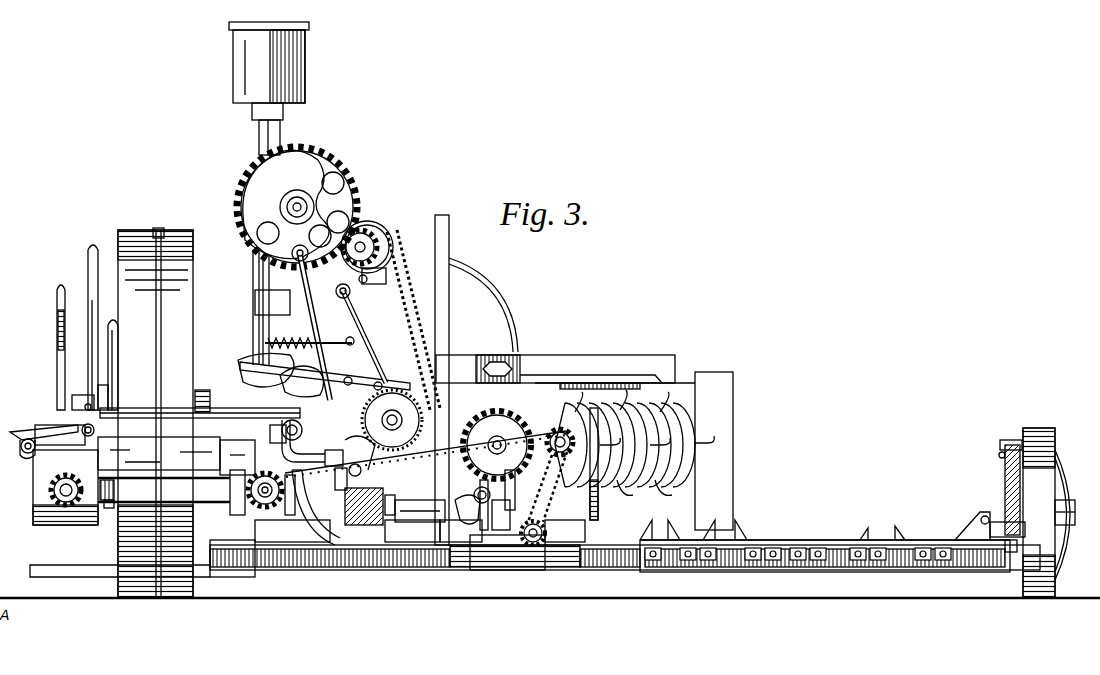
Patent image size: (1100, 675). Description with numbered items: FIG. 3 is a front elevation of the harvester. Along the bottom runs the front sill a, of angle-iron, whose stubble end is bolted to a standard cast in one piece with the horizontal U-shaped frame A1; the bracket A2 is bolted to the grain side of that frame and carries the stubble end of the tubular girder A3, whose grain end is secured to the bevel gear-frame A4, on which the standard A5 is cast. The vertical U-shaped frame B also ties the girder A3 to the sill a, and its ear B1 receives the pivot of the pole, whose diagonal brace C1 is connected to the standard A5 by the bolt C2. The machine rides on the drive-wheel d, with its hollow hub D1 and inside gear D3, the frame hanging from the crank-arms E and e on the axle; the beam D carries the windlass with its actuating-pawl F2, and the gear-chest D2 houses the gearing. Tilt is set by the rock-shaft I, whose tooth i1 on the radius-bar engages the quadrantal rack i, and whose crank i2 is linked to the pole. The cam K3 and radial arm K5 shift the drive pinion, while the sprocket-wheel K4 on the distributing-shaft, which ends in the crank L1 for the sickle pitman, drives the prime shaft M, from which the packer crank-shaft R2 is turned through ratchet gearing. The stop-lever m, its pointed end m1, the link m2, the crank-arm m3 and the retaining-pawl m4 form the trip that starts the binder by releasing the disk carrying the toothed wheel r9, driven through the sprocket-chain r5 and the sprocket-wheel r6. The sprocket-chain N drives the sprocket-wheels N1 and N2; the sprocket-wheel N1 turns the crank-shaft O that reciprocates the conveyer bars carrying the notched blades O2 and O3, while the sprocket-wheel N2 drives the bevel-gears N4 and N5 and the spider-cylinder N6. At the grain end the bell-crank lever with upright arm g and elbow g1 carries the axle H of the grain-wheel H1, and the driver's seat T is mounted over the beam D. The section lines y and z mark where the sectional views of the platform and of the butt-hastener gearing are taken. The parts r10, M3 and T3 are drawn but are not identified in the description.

The main cam gear r10 is at (336, 157).
The toothed wheel r9 is at (372, 222).
The sprocket-wheel r6 is at (393, 230).
The sprocket-chain r5 is at (412, 298).
The stop-lever m is at (325, 322).
The pointed end of stop-lever m1 is at (385, 380).
The link m2 is at (356, 343).
The crank-arm m3 is at (352, 300).
The retaining-pawl m4 is at (335, 272).
The drive-wheel d is at (140, 305).
The actuating-pawl F2 is at (52, 347).
The tooth i1 is at (90, 302).
The quadrantal rack i is at (118, 373).
The crank i2 is at (86, 400).
The sprocket-wheel K4 is at (105, 379).
The radial arm K5 is at (44, 437).
The cam K3 is at (164, 490).
The crank-arm e is at (208, 399).
The rock-shaft I is at (238, 408).
The U-shaped frame A1 is at (159, 453).
The standard or bracket A2 is at (237, 457).
The tubular girder A3 is at (347, 531).
The bevel gear-frame A4 is at (510, 545).
The standard A5 is at (565, 531).
The beam D is at (262, 494).
The hollow hub D1 is at (64, 434).
The gear-chest D2 is at (44, 456).
The inside gear D3 is at (35, 480).
The crank-arm E is at (110, 510).
The crank L1 is at (312, 443).
The prime shaft M is at (286, 426).
The link M3 is at (360, 456).
The vertical U-shaped frame B is at (316, 507).
The ear B1 is at (345, 570).
The bracket T3 is at (347, 479).
The diagonal brace C1 is at (370, 506).
The bolt C2 is at (421, 511).
The crank-shaft R2 is at (392, 420).
The driver's seat T is at (392, 420).
The sprocket-chain N is at (432, 465).
The sprocket-wheel N1 is at (527, 520).
The sprocket-wheel N2 is at (560, 437).
The bevel-gear N4 is at (438, 420).
The bevel-gear N5 is at (497, 445).
The spider-cylinder N6 is at (640, 432).
The front sill a is at (625, 556).
The horizontal shaft O is at (520, 570).
The notched blades O2 is at (693, 529).
The notched blades O3 is at (889, 531).
The axle H is at (1072, 512).
The grain-wheel H1 is at (1046, 513).
The upright arm g is at (1010, 483).
The elbow g1 is at (997, 532).
The section line y is at (203, 645).
The section line z is at (533, 500).